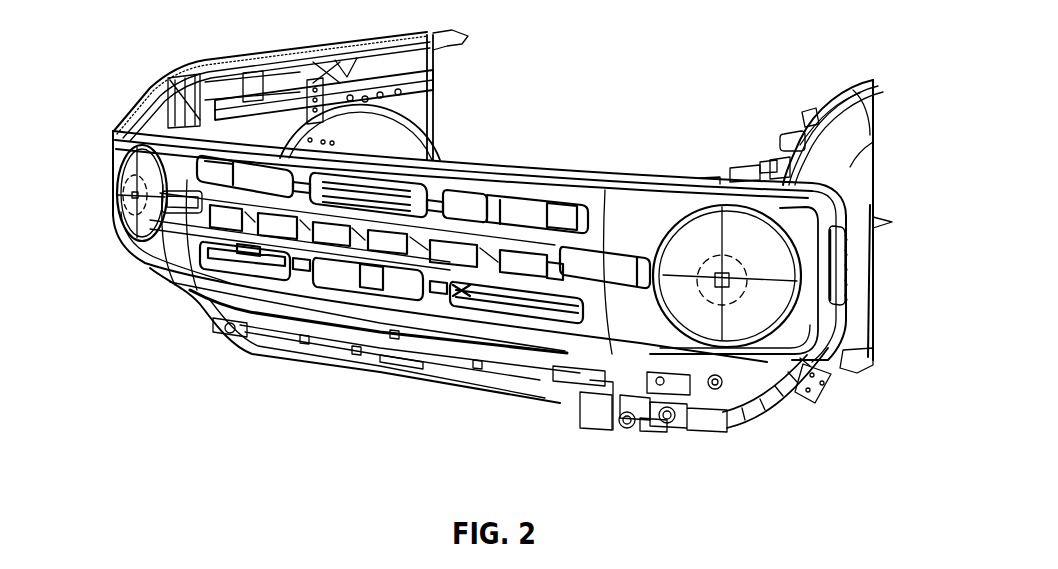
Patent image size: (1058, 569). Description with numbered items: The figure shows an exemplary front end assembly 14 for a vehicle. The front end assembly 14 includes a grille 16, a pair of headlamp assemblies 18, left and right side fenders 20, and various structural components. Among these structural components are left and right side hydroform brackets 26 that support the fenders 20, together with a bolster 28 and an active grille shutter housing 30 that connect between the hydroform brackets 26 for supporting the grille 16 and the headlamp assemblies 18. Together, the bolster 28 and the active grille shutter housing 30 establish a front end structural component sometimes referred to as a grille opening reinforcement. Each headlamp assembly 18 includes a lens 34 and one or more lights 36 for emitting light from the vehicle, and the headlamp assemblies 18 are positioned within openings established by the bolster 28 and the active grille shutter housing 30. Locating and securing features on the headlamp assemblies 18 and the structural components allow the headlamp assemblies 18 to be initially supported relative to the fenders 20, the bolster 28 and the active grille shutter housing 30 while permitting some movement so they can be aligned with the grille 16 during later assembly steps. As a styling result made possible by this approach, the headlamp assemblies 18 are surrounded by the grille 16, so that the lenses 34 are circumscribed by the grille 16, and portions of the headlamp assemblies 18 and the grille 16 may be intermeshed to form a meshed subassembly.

The front end assembly 14 is at (690, 63).
The grille 16 is at (623, 323).
The headlamp assembly 18 is at (132, 222).
The side fender 20 is at (318, 42).
The hydroform bracket 26 is at (403, 90).
The bolster 28 is at (200, 80).
The active grille shutter housing 30 is at (382, 350).
The lens 34 is at (124, 171).
The light 36 is at (116, 208).